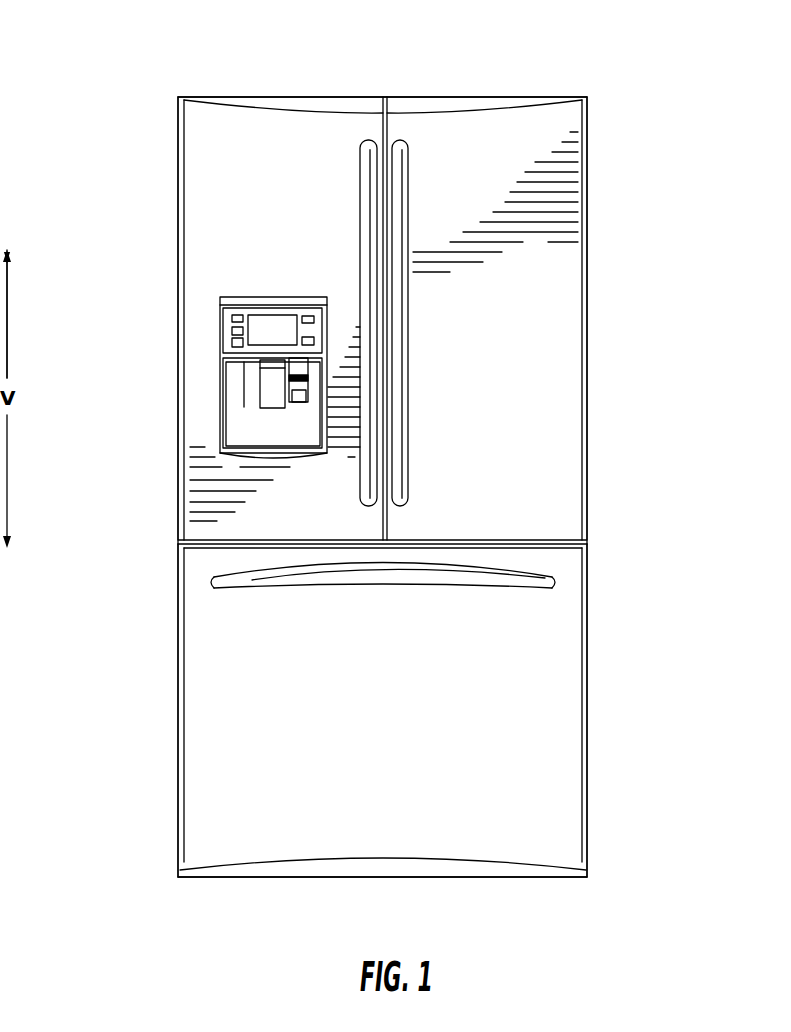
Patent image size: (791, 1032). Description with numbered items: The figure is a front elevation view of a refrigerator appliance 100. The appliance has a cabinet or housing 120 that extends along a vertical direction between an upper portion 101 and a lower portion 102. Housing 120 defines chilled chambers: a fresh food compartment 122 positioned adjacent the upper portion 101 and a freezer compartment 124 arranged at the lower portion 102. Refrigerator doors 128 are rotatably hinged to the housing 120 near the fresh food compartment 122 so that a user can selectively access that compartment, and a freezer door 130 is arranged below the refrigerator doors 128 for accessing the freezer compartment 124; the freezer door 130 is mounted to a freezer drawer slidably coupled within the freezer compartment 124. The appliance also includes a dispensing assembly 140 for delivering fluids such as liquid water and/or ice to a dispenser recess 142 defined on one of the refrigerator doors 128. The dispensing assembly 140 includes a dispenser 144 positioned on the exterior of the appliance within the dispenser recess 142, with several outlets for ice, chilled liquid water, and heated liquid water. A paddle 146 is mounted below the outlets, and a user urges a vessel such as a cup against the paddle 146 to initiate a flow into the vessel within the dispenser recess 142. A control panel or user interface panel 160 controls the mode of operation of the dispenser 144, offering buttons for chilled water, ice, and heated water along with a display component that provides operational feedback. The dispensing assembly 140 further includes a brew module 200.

The refrigerator appliance 100 is at (92, 109).
The upper portion 101 is at (600, 99).
The lower portion 102 is at (602, 856).
The housing 120 is at (588, 541).
The fresh food compartment 122 is at (542, 394).
The freezer compartment 124 is at (542, 677).
The refrigerator doors 128 is at (222, 174).
The freezer door 130 is at (252, 692).
The dispensing assembly 140 is at (195, 369).
The dispenser recess 142 is at (232, 417).
The dispenser 144 is at (232, 294).
The paddle 146 is at (271, 398).
The user interface panel 160 is at (294, 298).
The brew module 200 is at (309, 382).